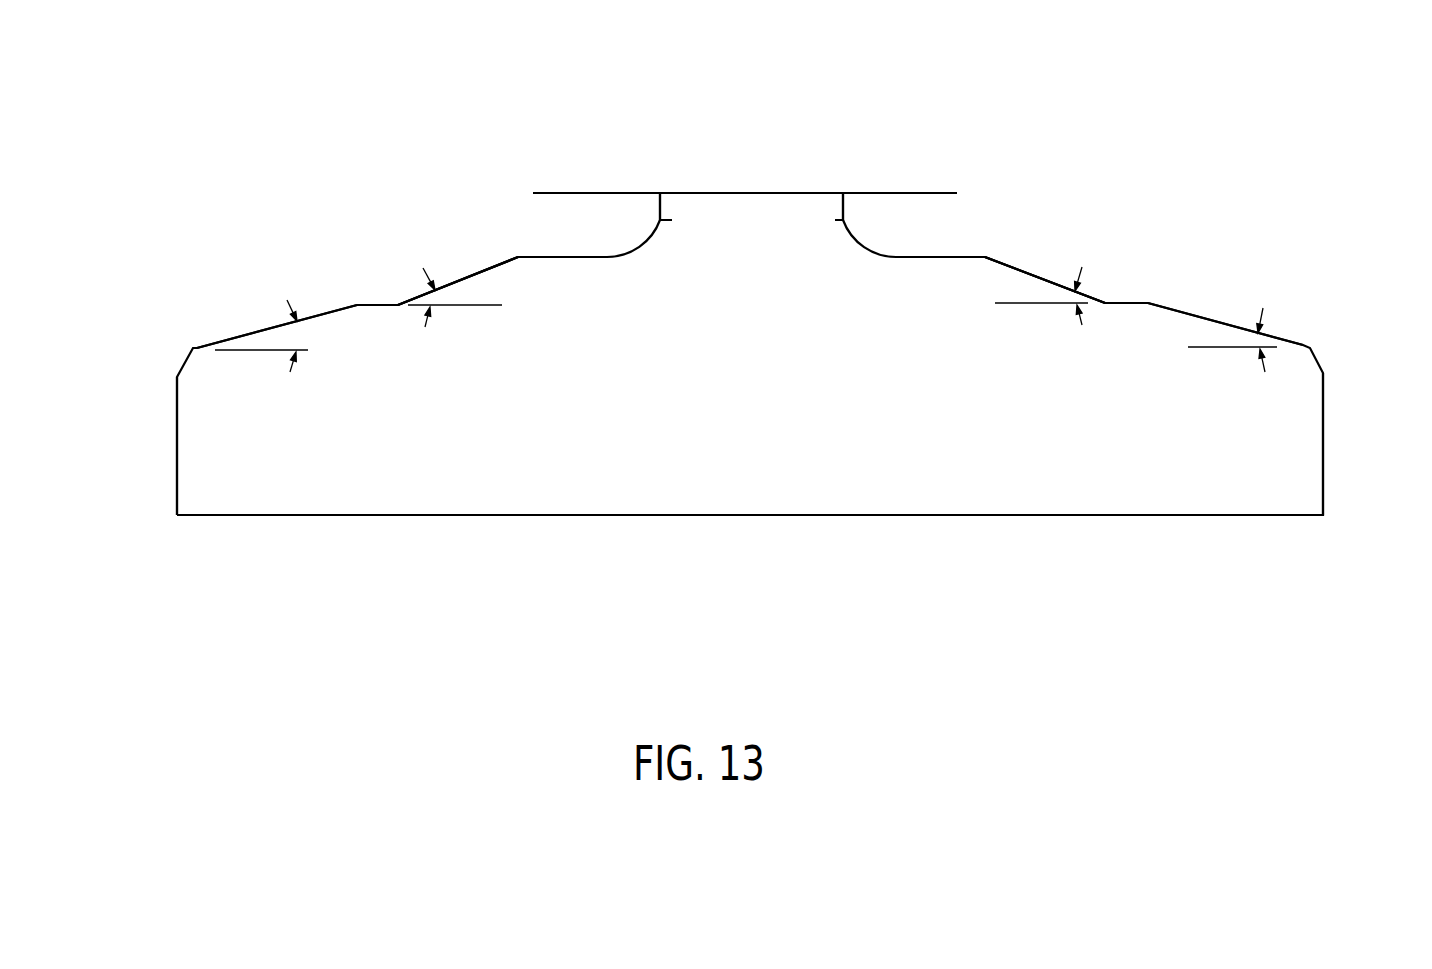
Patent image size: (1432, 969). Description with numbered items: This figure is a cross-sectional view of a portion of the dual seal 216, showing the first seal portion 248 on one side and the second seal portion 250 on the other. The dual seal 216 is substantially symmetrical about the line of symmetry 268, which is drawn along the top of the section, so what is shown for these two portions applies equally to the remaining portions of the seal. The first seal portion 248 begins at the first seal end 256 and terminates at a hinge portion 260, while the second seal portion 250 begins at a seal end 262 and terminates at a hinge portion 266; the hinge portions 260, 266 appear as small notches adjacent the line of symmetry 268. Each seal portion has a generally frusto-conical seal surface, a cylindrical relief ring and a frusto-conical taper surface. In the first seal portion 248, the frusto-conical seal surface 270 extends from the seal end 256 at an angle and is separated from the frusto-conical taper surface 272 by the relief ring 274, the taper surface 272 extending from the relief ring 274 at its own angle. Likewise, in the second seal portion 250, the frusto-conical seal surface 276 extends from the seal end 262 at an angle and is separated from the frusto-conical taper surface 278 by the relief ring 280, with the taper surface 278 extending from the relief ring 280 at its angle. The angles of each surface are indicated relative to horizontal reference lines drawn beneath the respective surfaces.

The dual seal 216 is at (789, 578).
The first seal portion 248 is at (398, 137).
The second seal portion 250 is at (1142, 148).
The first seal end 256 is at (177, 455).
The seal end 262 is at (1323, 450).
The hinge portion 260 is at (672, 220).
The hinge portion 266 is at (835, 220).
The line of symmetry 268 is at (595, 193).
The frusto-conical seal surface 270 is at (248, 334).
The frusto-conical taper surface 272 is at (448, 285).
The relief ring 274 is at (380, 305).
The frusto-conical seal surface 276 is at (1235, 325).
The frusto-conical taper surface 278 is at (1033, 273).
The relief ring 280 is at (1132, 302).